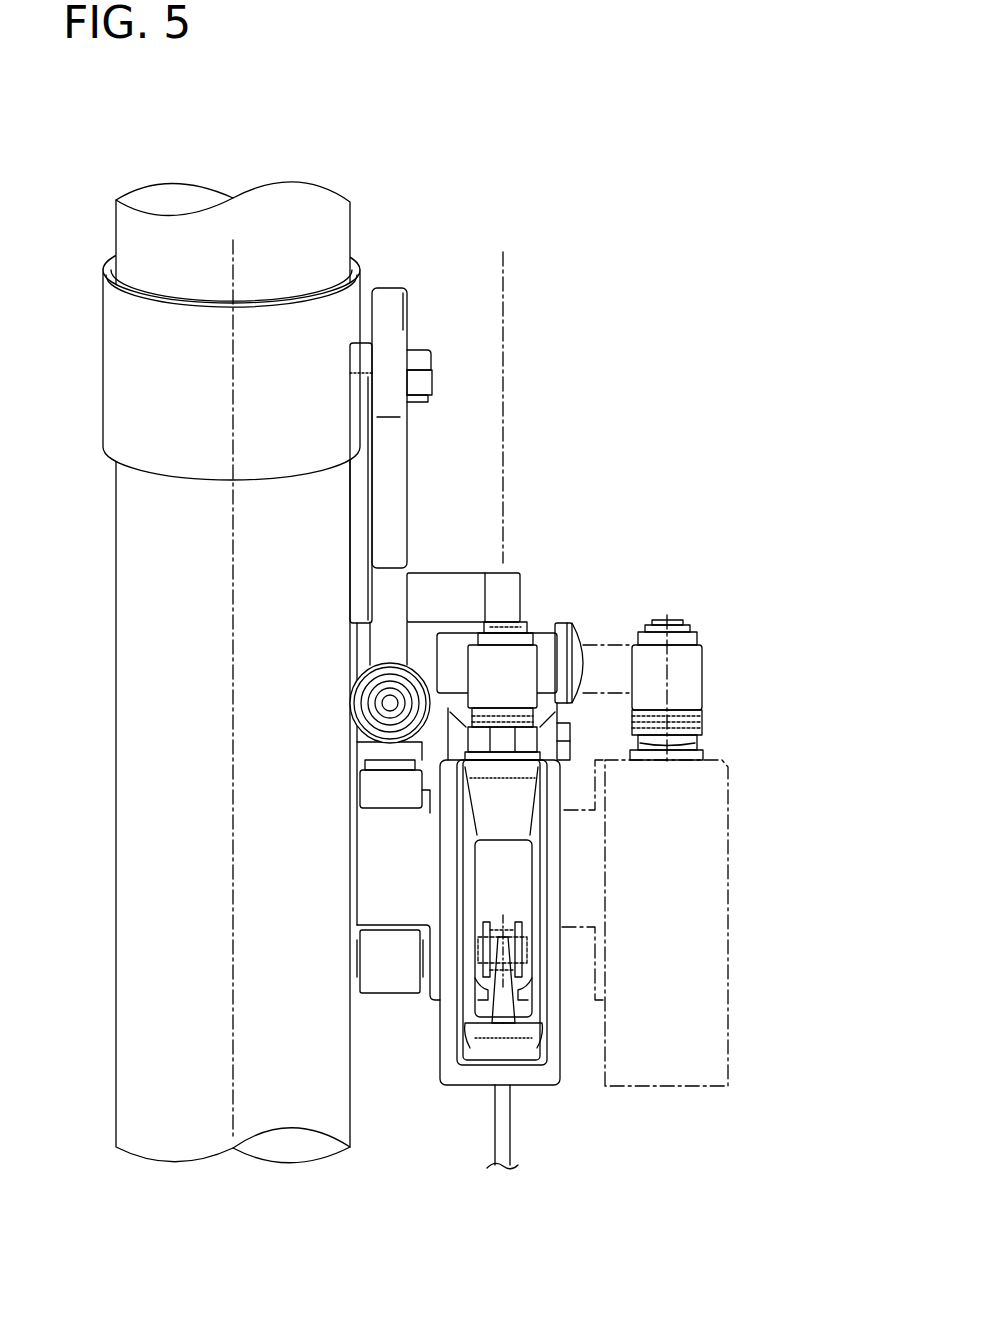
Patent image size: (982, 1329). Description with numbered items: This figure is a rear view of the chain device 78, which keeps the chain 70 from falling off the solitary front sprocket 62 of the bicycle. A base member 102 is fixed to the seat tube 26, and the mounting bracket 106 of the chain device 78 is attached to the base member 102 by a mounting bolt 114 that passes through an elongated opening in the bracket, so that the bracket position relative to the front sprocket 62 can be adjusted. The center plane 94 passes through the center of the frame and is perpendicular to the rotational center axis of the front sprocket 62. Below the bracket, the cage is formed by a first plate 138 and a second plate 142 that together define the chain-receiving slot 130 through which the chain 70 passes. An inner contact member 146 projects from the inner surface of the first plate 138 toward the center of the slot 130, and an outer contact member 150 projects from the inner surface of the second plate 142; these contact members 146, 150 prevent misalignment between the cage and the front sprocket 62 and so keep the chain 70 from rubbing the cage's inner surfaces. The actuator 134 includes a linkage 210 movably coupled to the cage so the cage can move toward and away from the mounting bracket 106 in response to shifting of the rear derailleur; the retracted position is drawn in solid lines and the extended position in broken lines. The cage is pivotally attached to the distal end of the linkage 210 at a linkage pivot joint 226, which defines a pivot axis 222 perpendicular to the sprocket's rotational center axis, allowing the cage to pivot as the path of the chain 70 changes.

The seat tube 26 is at (283, 228).
The chain device 78 is at (543, 163).
The center plane 94 is at (232, 712).
The base member 102 is at (199, 636).
The mounting bracket 106 is at (378, 288).
The mounting bolt 114 is at (413, 360).
The chain-receiving slot 130 is at (503, 842).
The actuator 134 is at (630, 500).
The first plate 138 is at (448, 1008).
The second plate 142 is at (511, 948).
The inner contact member 146 is at (473, 1028).
The outer contact member 150 is at (532, 1028).
The front sprocket 62 is at (503, 1140).
The chain 70 is at (512, 928).
The linkage 210 is at (543, 654).
The pivot axis 222 is at (503, 305).
The linkage pivot joint 226 is at (520, 635).